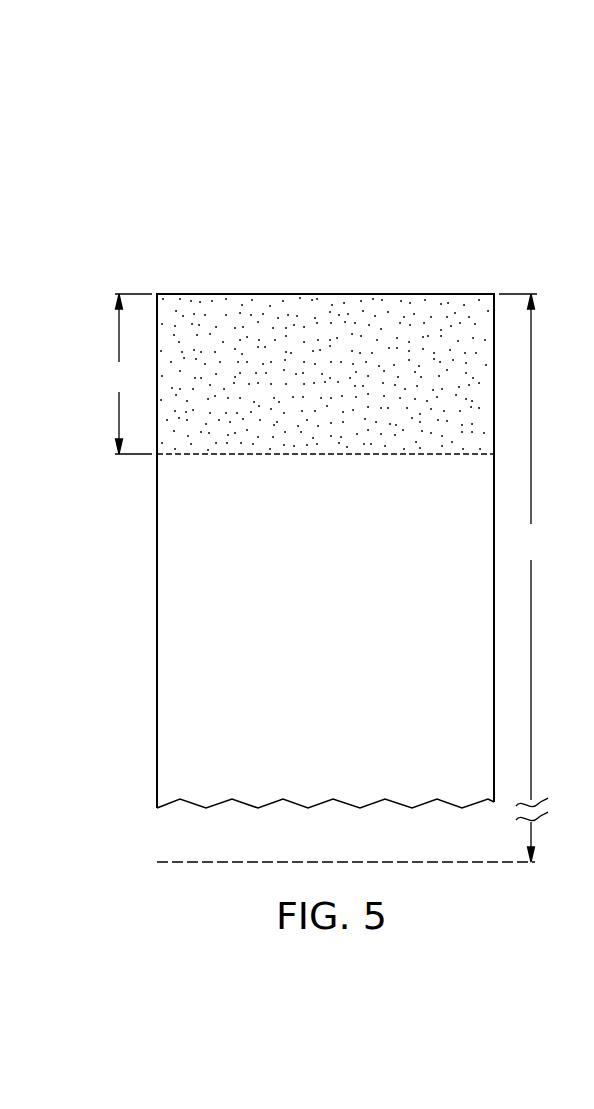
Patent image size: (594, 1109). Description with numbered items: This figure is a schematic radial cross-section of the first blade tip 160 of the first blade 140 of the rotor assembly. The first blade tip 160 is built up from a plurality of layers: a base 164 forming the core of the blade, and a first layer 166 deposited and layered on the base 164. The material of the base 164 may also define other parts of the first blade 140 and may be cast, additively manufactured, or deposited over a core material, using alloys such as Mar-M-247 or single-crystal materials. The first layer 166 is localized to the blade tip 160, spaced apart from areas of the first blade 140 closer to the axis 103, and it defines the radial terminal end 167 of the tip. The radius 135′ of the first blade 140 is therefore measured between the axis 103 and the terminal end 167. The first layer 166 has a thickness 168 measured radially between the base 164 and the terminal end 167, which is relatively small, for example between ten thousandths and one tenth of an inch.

The first blade 140 is at (153, 269).
The first blade tip 160 is at (223, 294).
The radial terminal end 167 is at (349, 293).
The thickness 168 is at (124, 374).
The first layer 166 is at (348, 387).
The base 164 is at (346, 634).
The radius 135′ is at (528, 578).
The axis 103 is at (461, 861).